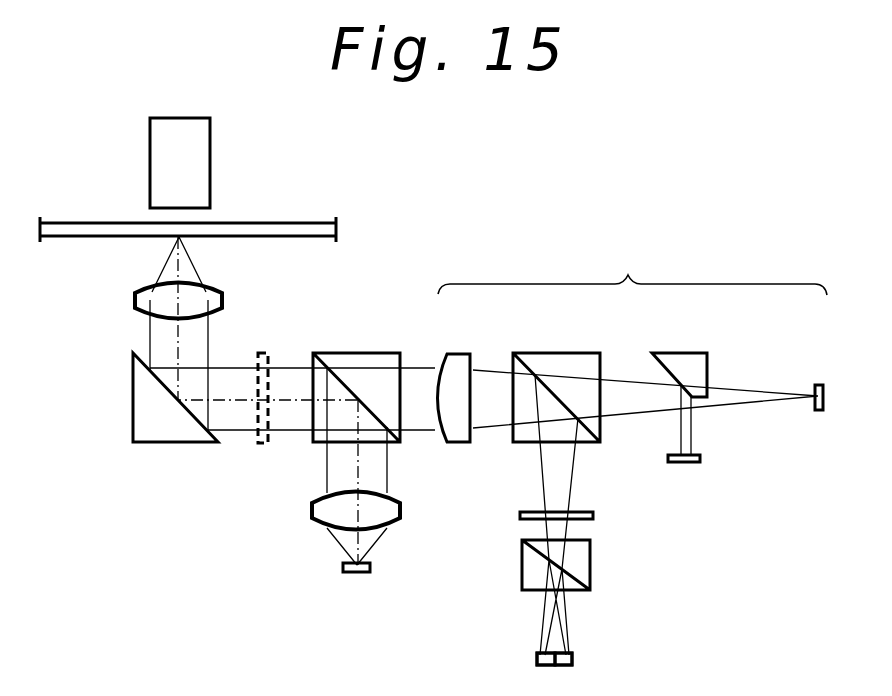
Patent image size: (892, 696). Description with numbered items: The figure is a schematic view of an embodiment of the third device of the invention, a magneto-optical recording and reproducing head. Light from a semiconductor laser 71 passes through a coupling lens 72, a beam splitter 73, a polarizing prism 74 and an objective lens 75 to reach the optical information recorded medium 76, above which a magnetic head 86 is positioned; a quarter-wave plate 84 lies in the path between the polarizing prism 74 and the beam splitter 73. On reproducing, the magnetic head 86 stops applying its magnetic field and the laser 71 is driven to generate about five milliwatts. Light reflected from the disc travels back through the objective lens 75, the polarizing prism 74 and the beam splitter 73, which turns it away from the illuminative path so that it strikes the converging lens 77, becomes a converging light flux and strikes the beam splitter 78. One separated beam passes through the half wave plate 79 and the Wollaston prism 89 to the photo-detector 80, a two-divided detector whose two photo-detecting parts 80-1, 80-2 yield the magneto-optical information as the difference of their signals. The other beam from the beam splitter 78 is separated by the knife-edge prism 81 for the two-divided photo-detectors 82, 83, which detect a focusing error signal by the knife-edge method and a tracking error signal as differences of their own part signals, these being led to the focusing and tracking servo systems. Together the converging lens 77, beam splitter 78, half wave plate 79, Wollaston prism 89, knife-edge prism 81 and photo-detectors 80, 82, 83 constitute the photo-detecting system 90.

The semiconductor laser 71 is at (372, 568).
The coupling lens 72 is at (395, 515).
The beam splitter 73 is at (368, 353).
The polarizing prism 74 is at (176, 443).
The objective lens 75 is at (222, 300).
The optical information recorded medium 76 is at (278, 222).
The converging lens 77 is at (457, 354).
The beam splitter 78 is at (568, 353).
The half wave plate 79 is at (594, 516).
The photo-detector 80 is at (573, 656).
The photo-detecting part 80-1 is at (545, 667).
The photo-detecting part 80-2 is at (565, 668).
The knife-edge prism 81 is at (680, 353).
The photo-detector 82 is at (690, 463).
The photo-detector 83 is at (820, 385).
The quarter-wave plate 84 is at (268, 356).
The magnetic head 86 is at (150, 165).
The Wollaston prism 89 is at (592, 566).
The photo-detecting system 90 is at (632, 268).